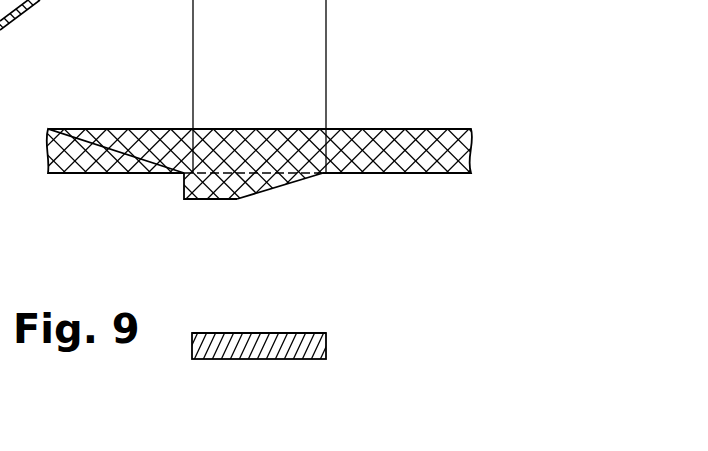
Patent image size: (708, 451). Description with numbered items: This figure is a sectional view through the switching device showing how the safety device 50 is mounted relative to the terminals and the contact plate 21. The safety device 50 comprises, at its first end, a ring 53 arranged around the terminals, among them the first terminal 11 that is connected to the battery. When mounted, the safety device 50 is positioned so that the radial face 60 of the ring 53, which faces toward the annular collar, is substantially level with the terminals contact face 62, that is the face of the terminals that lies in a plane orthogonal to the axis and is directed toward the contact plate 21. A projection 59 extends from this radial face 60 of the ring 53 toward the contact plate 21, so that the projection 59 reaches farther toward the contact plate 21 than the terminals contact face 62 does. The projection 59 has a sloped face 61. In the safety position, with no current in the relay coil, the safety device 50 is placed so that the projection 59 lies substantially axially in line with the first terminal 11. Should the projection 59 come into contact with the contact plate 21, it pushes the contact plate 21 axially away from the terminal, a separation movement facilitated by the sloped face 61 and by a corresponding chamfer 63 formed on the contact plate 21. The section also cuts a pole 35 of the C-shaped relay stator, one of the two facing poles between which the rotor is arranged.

The first terminal 11 is at (292, 58).
The contact plate 21 is at (293, 345).
The pole 35 is at (30, 3).
The safety device 50 is at (281, 133).
The ring 53 is at (431, 150).
The projection 59 is at (220, 185).
The radial face 60 is at (455, 176).
The sloped face 61 is at (292, 185).
The terminals contact face 62 is at (258, 182).
The chamfer 63 is at (203, 338).